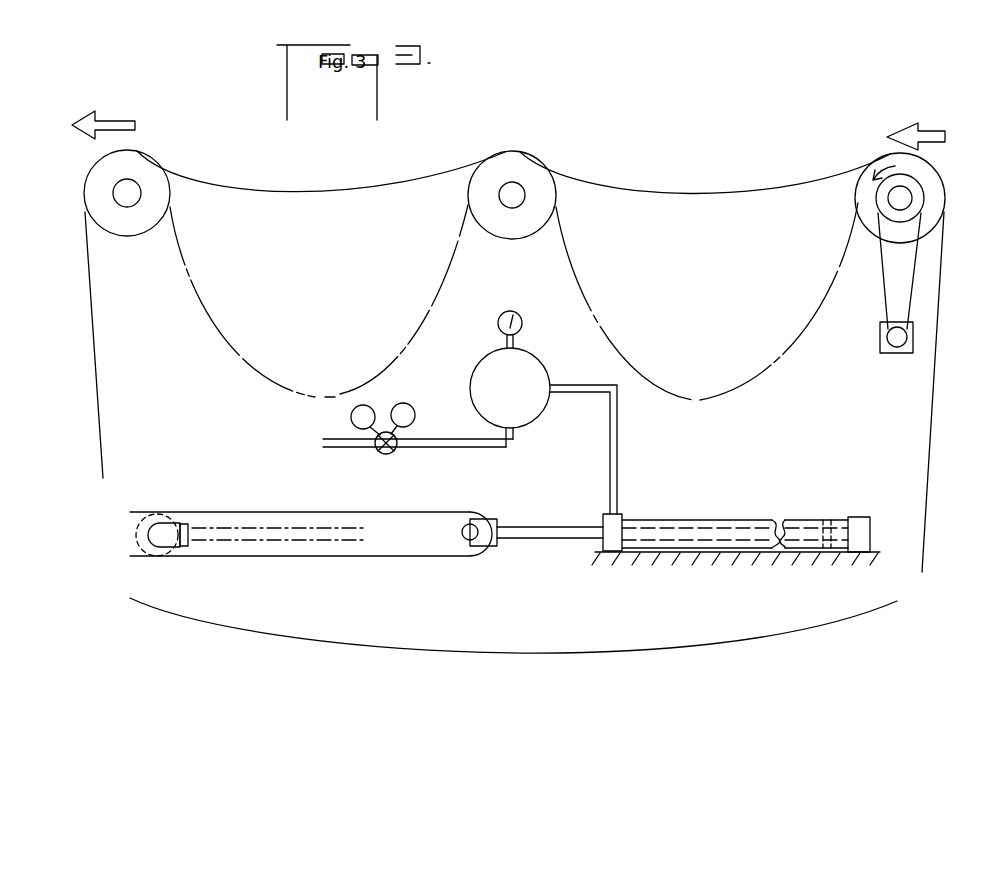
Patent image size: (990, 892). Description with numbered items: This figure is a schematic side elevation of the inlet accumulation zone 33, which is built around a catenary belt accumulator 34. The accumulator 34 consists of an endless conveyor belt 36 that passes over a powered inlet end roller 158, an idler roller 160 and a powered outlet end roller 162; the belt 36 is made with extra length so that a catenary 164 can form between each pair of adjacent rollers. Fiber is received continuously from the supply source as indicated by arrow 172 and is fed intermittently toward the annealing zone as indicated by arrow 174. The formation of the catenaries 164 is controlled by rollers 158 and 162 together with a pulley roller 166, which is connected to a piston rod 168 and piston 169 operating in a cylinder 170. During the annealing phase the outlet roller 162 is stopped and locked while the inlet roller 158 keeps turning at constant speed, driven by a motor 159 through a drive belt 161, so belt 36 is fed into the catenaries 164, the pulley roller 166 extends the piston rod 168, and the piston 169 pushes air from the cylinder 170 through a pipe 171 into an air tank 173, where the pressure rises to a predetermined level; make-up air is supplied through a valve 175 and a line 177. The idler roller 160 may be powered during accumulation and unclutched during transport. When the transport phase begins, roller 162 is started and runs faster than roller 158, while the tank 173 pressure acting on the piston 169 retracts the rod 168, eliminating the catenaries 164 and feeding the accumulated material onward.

The inlet accumulation zone 33 is at (724, 136).
The catenary belt accumulator 34 is at (214, 430).
The endless conveyor belt 36 is at (300, 190).
The powered inlet end roller 158 is at (888, 243).
The motor 159 is at (896, 353).
The idler roller 160 is at (512, 240).
The drive belt 161 is at (880, 298).
The powered outlet end roller 162 is at (127, 237).
The catenary 164 is at (388, 376).
The pulley roller 166 is at (480, 509).
The piston rod 168 is at (547, 526).
The piston 169 is at (828, 519).
The cylinder 170 is at (693, 520).
The pipe 171 is at (618, 431).
The arrow 172 is at (925, 128).
The air tank 173 is at (553, 370).
The arrow 174 is at (117, 123).
The valve 175 is at (386, 455).
The line 177 is at (518, 434).